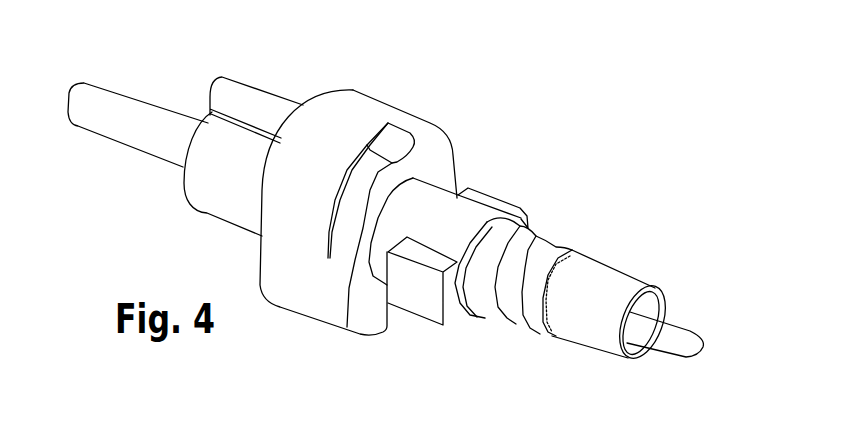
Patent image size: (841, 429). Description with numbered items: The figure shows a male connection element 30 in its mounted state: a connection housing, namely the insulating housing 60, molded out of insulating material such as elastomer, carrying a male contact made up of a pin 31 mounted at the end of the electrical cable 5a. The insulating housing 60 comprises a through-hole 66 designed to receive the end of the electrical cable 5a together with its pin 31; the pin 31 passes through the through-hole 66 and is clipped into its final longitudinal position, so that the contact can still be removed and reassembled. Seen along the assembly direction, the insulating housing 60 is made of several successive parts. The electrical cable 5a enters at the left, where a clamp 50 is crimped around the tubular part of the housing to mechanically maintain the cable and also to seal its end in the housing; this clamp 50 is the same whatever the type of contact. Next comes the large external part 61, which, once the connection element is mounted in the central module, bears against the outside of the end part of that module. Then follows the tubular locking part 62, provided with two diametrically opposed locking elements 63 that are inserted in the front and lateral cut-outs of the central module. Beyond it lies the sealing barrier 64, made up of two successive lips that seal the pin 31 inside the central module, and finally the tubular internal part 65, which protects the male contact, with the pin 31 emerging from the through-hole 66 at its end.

The electrical cable 5a is at (107, 117).
The male connection element 30 is at (195, 50).
The pin 31 is at (675, 340).
The clamp 50 is at (227, 193).
The insulating housing 60 is at (342, 62).
The external part 61 is at (358, 118).
The locking part 62 is at (427, 205).
The locking elements 63 is at (493, 202).
The sealing barrier 64 is at (550, 257).
The internal part 65 is at (628, 318).
The through-hole 66 is at (647, 348).